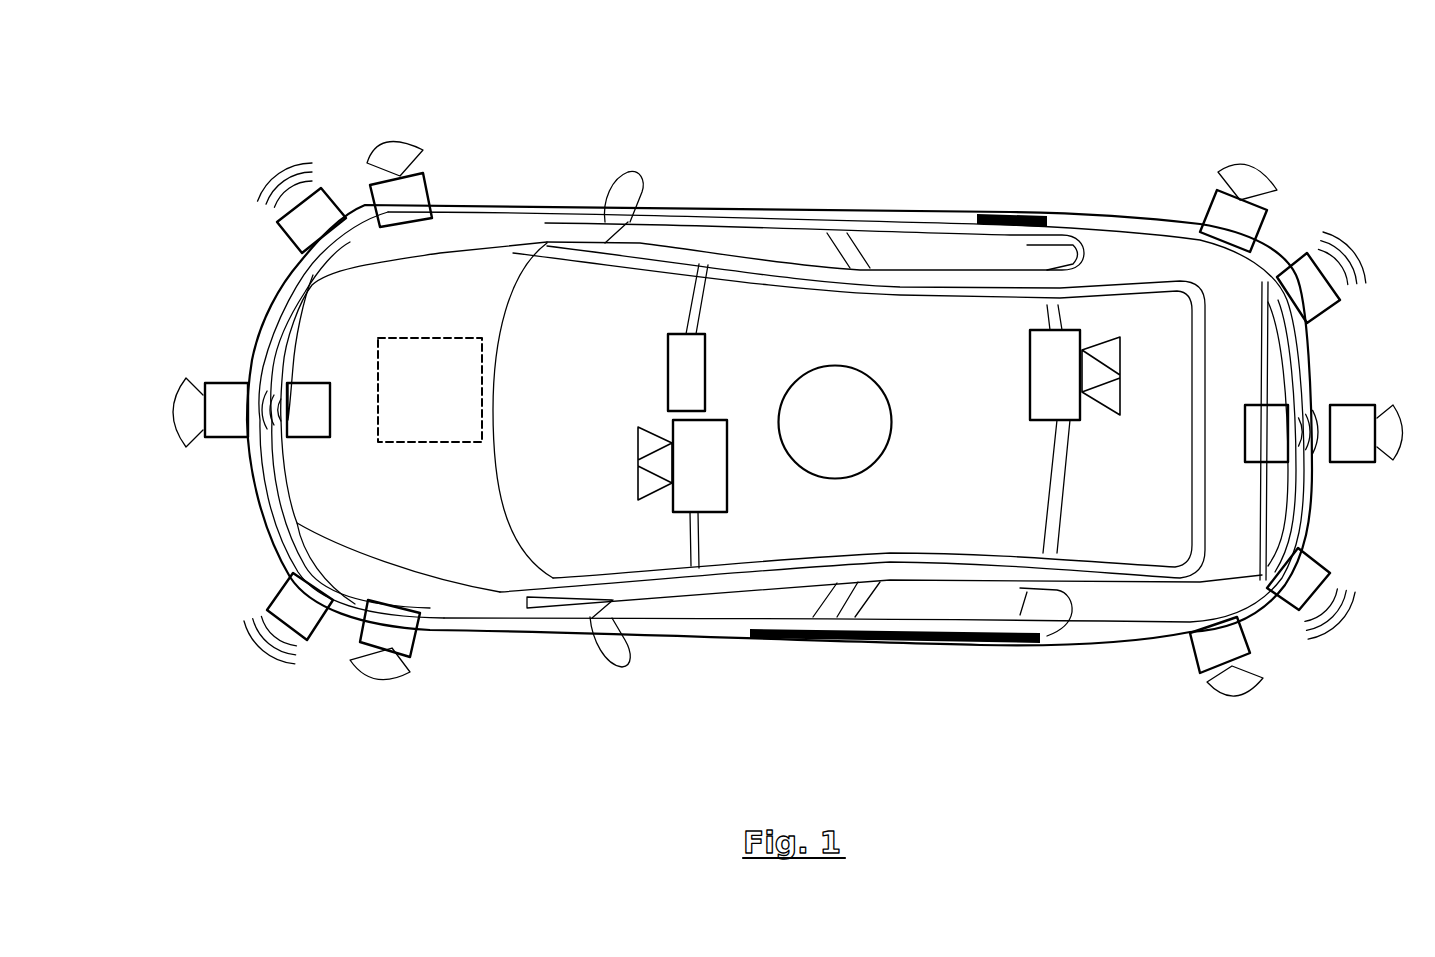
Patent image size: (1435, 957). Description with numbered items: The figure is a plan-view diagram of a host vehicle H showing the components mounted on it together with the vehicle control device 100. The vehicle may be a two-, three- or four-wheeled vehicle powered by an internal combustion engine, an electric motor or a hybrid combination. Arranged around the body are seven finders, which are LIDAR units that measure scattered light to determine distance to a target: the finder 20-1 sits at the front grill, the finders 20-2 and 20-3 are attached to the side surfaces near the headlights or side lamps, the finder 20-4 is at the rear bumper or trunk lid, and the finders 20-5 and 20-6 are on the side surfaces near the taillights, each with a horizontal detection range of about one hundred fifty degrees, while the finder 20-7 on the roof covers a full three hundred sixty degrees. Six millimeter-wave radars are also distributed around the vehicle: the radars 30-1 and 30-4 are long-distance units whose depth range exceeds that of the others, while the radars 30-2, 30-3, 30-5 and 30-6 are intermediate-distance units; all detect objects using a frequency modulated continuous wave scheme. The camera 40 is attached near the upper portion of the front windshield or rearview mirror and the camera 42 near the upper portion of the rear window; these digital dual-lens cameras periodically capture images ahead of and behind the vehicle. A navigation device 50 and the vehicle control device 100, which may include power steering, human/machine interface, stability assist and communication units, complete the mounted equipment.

The host vehicle H is at (703, 207).
The vehicle control device 100 is at (437, 338).
The finder 20-1 is at (227, 427).
The finder 20-2 is at (400, 633).
The finder 20-3 is at (418, 193).
The finder 20-4 is at (1350, 470).
The finder 20-5 is at (1210, 655).
The finder 20-6 is at (1217, 213).
The finder 20-7 is at (858, 446).
The radar 30-1 is at (307, 432).
The radar 30-2 is at (310, 617).
The radar 30-3 is at (338, 202).
The radar 30-4 is at (1270, 418).
The radar 30-5 is at (1290, 600).
The radar 30-6 is at (1300, 267).
The camera 40 is at (703, 470).
The camera 42 is at (1050, 377).
The navigation device 50 is at (688, 352).